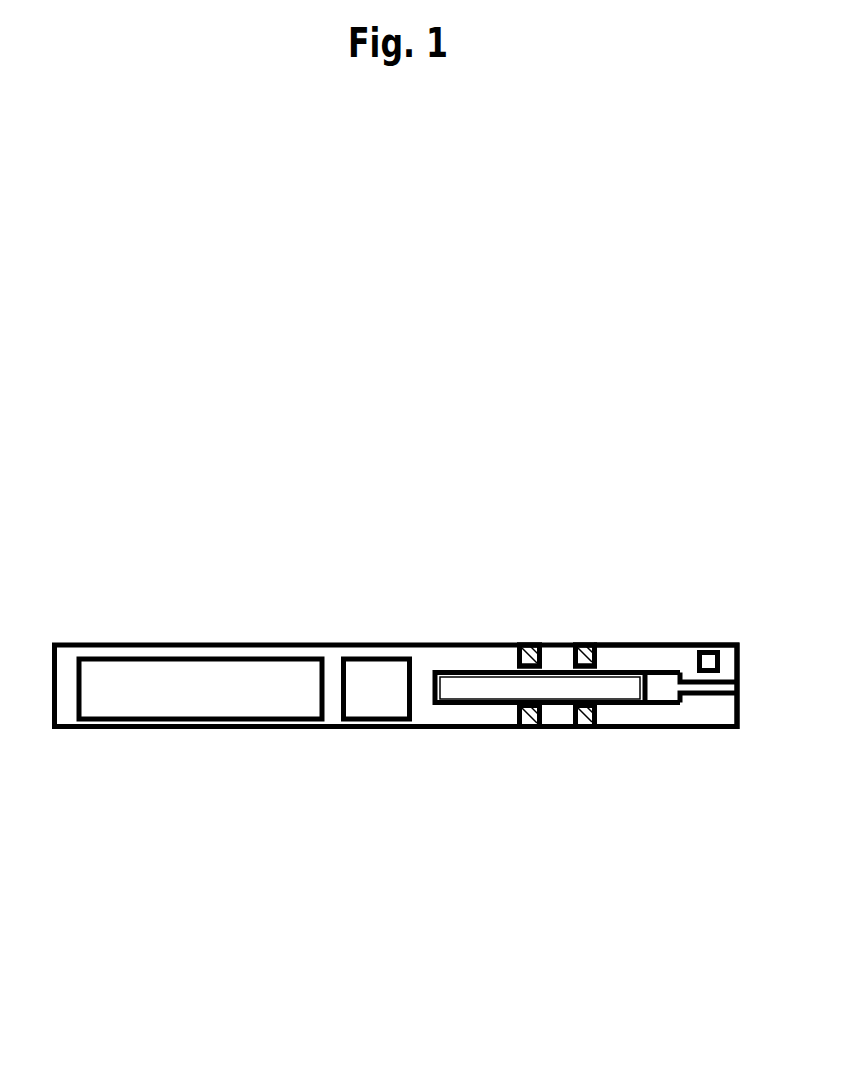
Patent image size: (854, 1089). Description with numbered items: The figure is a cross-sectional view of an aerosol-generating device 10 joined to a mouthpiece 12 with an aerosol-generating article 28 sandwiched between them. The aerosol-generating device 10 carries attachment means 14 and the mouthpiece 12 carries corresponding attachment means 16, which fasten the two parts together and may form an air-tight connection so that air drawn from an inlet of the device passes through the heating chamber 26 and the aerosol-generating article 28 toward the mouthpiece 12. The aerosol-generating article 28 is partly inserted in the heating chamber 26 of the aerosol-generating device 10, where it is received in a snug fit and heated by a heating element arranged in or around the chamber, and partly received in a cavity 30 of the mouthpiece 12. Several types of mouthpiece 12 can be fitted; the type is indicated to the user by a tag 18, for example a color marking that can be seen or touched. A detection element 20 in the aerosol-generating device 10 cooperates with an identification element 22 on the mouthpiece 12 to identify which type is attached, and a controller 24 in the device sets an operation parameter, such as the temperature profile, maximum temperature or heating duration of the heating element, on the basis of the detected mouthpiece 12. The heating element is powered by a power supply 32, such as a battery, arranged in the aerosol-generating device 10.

The aerosol-generating device 10 is at (320, 614).
The mouthpiece 12 is at (645, 612).
The attachment means 14 is at (527, 643).
The corresponding attachment means 16 is at (585, 643).
The tag 18 is at (710, 658).
The detection element 20 is at (530, 686).
The identification element 22 is at (585, 686).
The controller 24 is at (395, 673).
The heating chamber 26 is at (463, 673).
The aerosol-generating article 28 is at (452, 690).
The cavity 30 is at (665, 690).
The power supply 32 is at (205, 685).